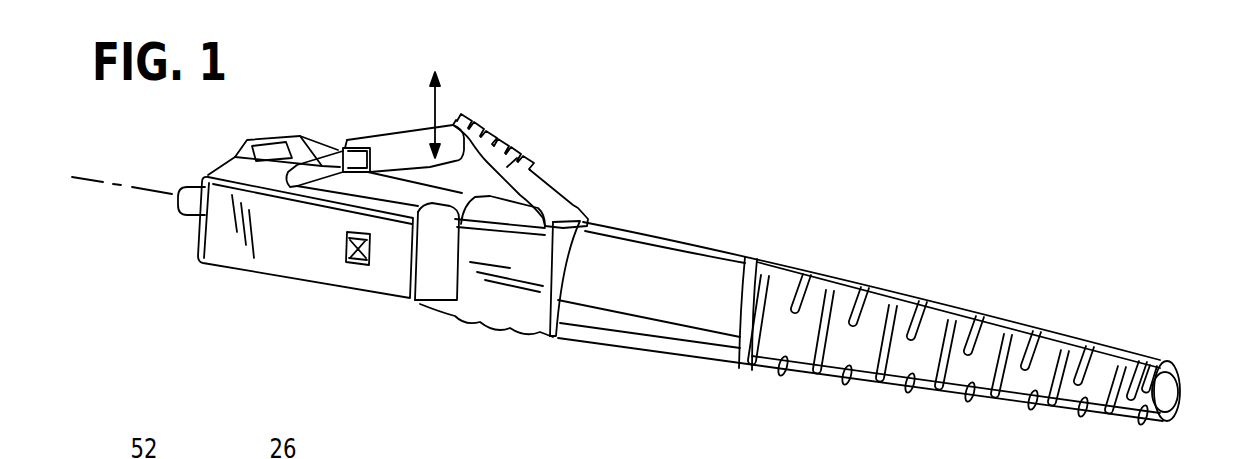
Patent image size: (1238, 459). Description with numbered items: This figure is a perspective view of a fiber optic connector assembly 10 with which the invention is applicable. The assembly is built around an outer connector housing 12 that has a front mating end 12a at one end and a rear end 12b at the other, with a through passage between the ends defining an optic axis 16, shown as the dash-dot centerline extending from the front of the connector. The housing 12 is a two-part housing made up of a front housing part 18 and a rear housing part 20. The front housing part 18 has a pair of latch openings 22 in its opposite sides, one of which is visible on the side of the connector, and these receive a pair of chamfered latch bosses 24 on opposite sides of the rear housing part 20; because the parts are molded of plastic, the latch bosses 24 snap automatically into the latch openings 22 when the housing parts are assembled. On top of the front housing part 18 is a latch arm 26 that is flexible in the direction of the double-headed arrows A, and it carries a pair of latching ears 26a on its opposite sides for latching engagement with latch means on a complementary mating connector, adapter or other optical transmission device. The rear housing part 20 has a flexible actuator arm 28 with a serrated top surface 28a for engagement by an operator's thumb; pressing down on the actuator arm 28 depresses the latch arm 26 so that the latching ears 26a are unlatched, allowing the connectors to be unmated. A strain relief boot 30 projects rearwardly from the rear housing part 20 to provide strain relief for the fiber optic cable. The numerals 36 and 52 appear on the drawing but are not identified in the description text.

The fiber optic connector assembly 10 is at (618, 178).
The outer connector housing 12 is at (412, 305).
The front mating end 12a is at (199, 236).
The rear end 12b is at (556, 340).
The optic axis 16 is at (142, 193).
The front housing part 18 is at (250, 242).
The rear housing part 20 is at (500, 308).
The latch openings 22 is at (360, 265).
The chamfered latch bosses 24 is at (347, 256).
The latch arm 26 is at (393, 150).
The latching ears 26a is at (352, 148).
The flexible actuator arm 28 is at (535, 157).
The serrated top surface 28a is at (494, 108).
The strain relief boot 30 is at (655, 263).
The ferrule 36 is at (190, 187).
The housing boss 52 is at (250, 163).
The double-headed arrows A is at (440, 115).